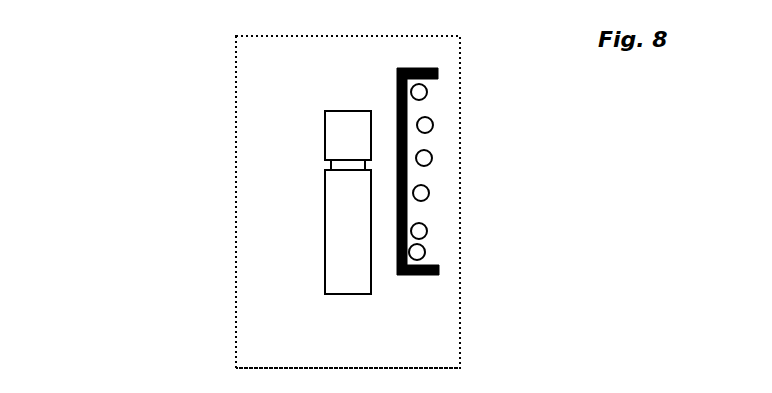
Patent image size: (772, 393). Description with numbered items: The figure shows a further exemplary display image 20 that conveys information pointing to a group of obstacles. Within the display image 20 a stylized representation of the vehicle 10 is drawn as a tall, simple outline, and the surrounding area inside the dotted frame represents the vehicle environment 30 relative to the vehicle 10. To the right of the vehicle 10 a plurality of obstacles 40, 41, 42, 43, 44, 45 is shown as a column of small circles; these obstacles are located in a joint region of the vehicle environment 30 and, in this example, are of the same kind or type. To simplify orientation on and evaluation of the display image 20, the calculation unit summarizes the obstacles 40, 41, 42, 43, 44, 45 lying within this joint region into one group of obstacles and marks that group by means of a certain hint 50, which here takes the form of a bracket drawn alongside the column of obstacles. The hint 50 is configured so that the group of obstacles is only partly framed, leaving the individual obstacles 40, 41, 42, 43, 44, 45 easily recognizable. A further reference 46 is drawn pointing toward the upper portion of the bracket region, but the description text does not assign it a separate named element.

The vehicle 10 is at (357, 198).
The display image 20 is at (235, 98).
The vehicle environment 30 is at (273, 287).
The obstacle 40 is at (431, 255).
The obstacle 41 is at (430, 238).
The obstacle 42 is at (437, 195).
The obstacle 43 is at (440, 160).
The obstacle 44 is at (438, 124).
The obstacle 45 is at (432, 92).
The sensor array region 46 is at (452, 78).
The hint 50 is at (397, 84).